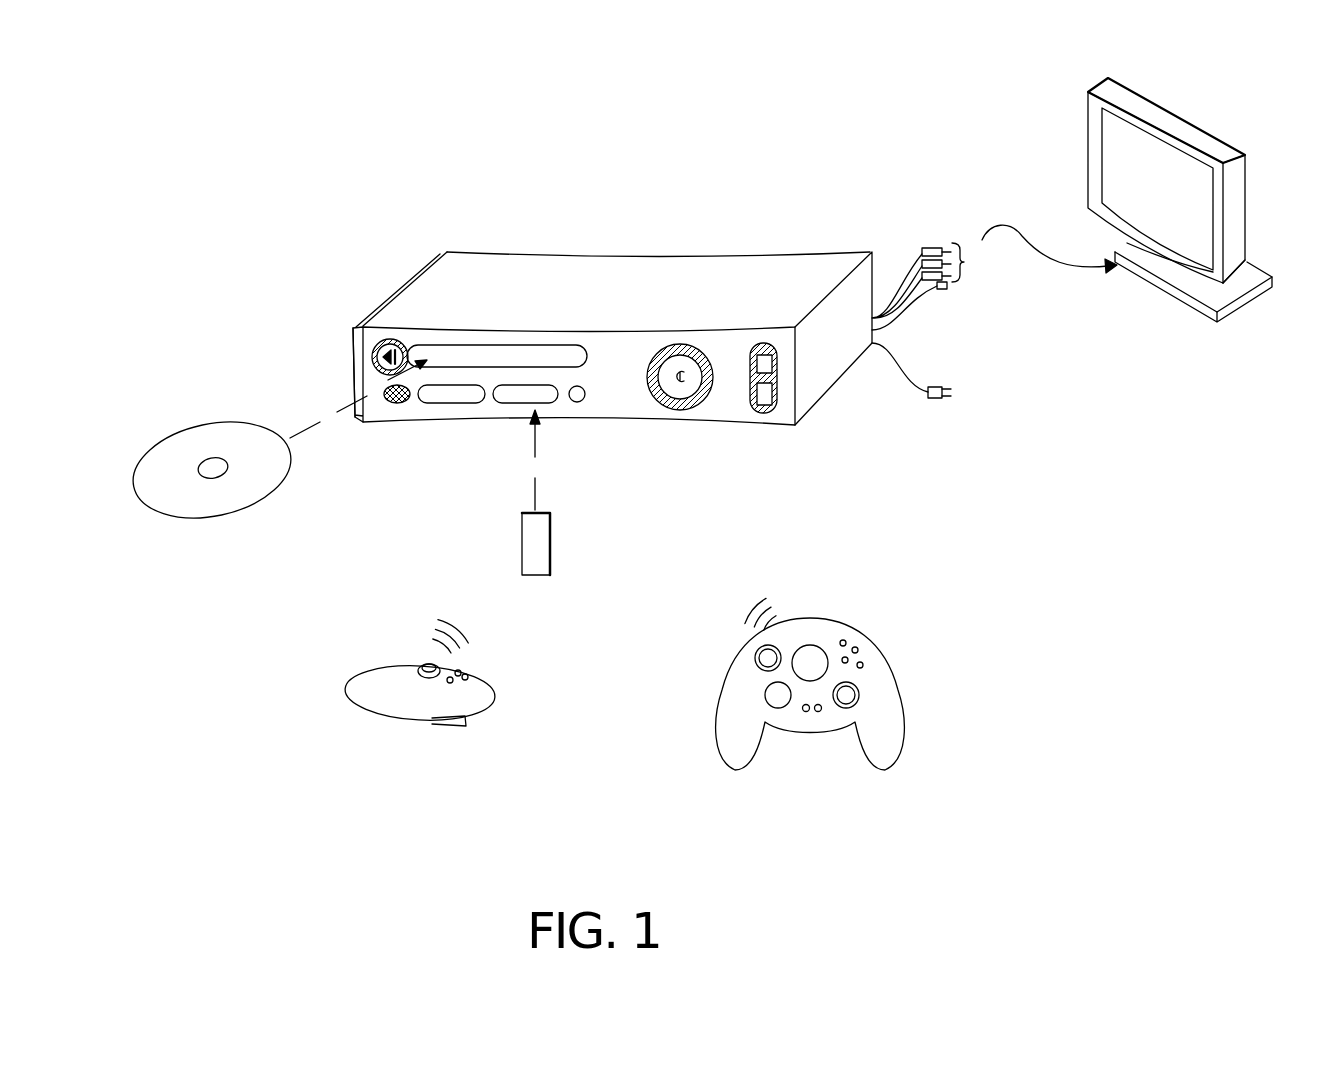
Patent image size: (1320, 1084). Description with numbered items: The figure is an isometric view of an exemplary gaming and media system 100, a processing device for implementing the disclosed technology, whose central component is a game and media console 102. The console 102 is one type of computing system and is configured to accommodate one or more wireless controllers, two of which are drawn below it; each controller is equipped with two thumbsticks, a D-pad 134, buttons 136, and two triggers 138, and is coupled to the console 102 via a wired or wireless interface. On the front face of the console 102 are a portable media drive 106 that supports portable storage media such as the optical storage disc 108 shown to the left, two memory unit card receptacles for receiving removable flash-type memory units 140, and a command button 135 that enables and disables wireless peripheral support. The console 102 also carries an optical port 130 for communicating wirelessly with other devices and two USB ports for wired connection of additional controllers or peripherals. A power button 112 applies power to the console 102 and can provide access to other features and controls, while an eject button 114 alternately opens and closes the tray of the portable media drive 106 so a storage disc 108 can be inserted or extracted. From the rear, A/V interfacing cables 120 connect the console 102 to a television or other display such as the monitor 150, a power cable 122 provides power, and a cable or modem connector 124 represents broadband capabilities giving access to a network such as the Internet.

The gaming and media system 100 is at (644, 216).
The game and media console 102 is at (482, 262).
The portable media drive 106 is at (503, 343).
The optical storage disc 108 is at (220, 518).
The power button 112 is at (682, 403).
The eject button 114 is at (378, 354).
The A/V interfacing cables 120 is at (922, 250).
The power cable 122 is at (928, 395).
The cable or modem connector 124 is at (945, 289).
The optical port 130 is at (393, 405).
The D-pad 134 is at (765, 695).
The command button 135 is at (577, 403).
The buttons 136 is at (858, 650).
The trigger 138 is at (463, 728).
The removable flash-type memory unit 140 is at (536, 575).
The monitor 150 is at (1088, 157).